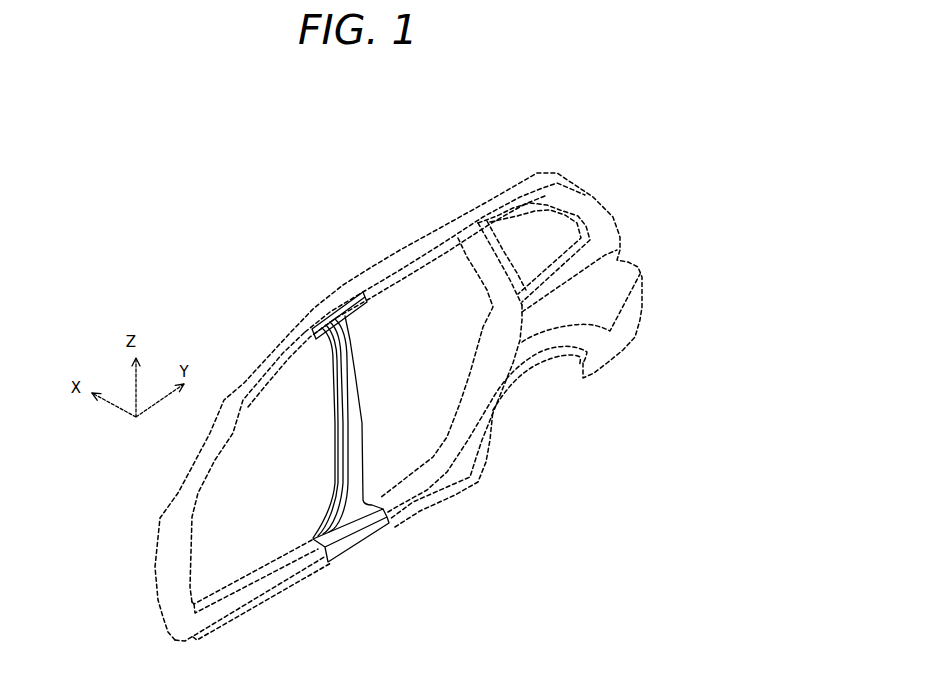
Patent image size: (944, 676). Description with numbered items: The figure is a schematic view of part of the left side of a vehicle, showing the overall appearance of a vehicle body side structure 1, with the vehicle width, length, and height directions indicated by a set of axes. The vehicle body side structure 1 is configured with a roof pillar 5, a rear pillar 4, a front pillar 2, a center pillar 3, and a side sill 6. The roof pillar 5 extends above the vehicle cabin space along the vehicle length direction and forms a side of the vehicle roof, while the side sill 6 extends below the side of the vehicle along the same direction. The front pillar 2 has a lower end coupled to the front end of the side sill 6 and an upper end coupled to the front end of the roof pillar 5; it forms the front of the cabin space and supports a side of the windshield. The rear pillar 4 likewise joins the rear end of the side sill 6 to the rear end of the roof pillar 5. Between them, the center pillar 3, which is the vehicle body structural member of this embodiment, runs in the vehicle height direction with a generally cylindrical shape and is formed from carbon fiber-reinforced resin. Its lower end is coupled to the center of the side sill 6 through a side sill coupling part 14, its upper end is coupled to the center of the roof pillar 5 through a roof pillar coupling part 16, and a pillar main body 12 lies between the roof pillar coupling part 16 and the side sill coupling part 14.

The vehicle body side structure 1 is at (562, 134).
The front pillar 2 is at (151, 482).
The center pillar 3 is at (362, 418).
The rear pillar 4 is at (475, 344).
The roof pillar 5 is at (407, 231).
The side sill 6 is at (444, 518).
The pillar main body 12 is at (363, 418).
The side sill coupling part 14 is at (355, 540).
The roof pillar coupling part 16 is at (333, 322).